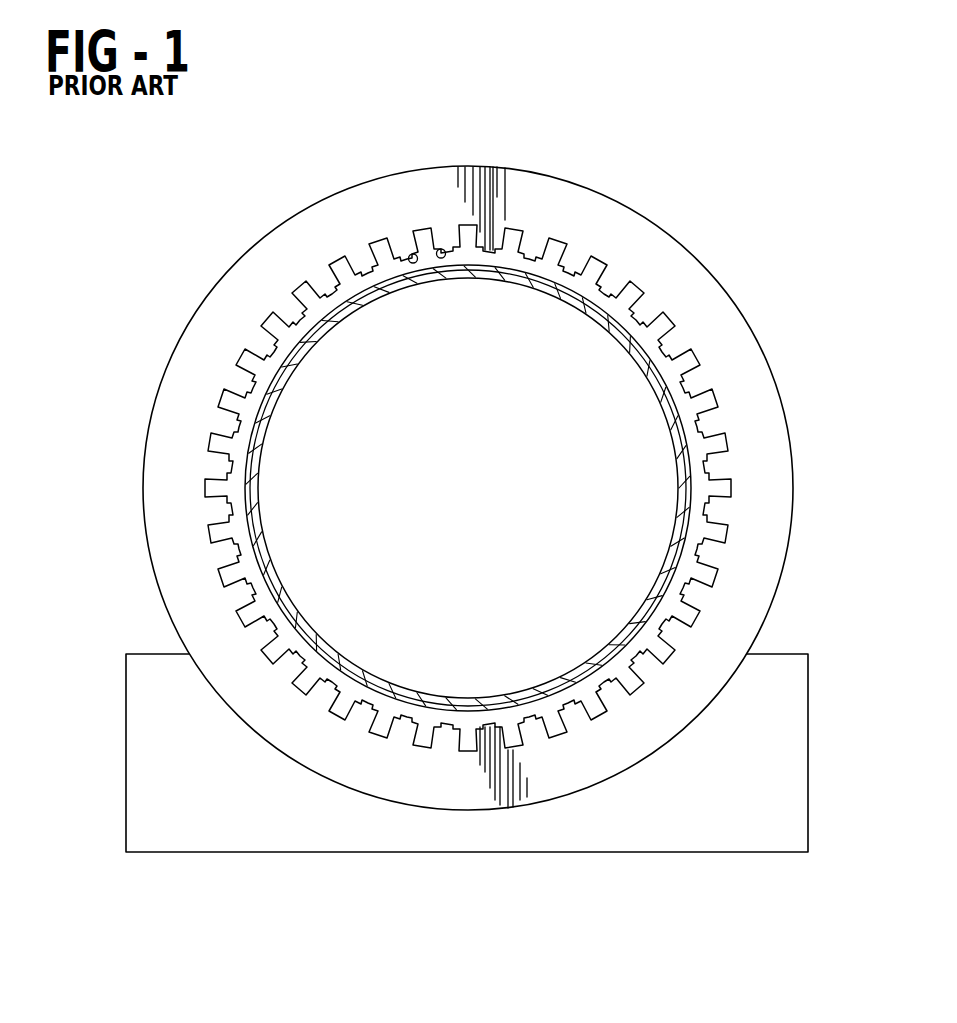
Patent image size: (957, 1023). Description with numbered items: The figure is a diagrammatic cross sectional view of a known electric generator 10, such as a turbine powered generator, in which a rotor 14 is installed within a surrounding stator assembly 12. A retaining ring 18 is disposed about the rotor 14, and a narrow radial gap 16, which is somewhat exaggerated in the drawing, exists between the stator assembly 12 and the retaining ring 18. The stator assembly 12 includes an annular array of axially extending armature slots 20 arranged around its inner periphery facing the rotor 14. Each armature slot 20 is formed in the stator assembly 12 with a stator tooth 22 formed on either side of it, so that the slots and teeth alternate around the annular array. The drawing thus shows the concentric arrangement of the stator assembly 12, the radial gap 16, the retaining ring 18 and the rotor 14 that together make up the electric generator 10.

The electric generator 10 is at (134, 643).
The stator assembly 12 is at (716, 243).
The rotor 14 is at (650, 508).
The narrow radial gap 16 is at (685, 570).
The retaining ring 18 is at (673, 423).
The armature slot 20 is at (380, 262).
The stator tooth 22 is at (443, 251).